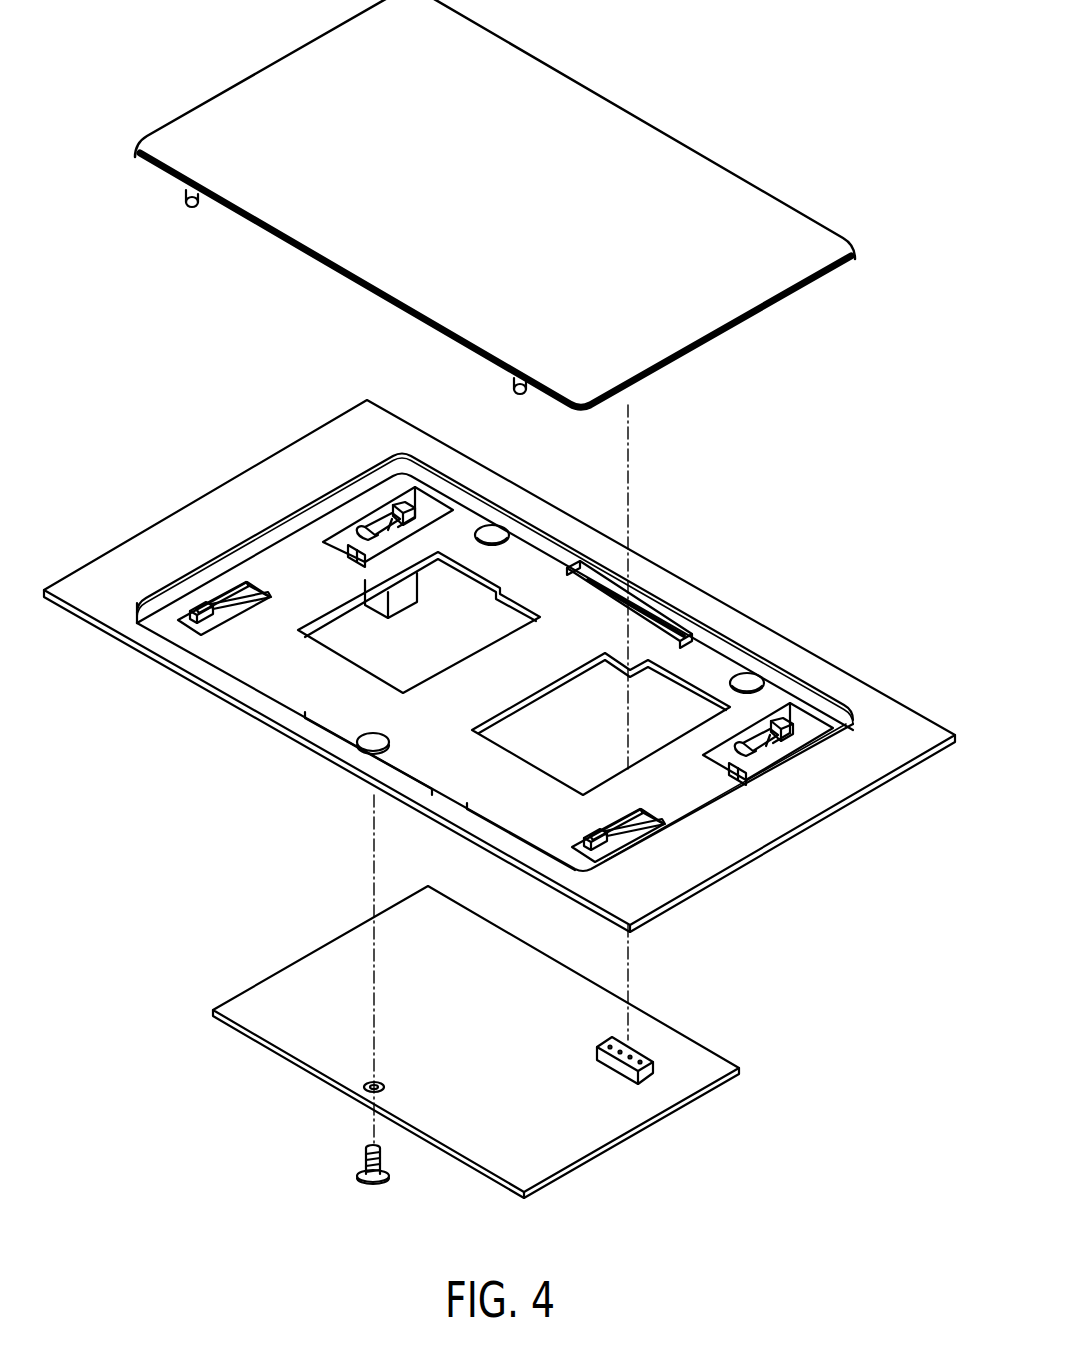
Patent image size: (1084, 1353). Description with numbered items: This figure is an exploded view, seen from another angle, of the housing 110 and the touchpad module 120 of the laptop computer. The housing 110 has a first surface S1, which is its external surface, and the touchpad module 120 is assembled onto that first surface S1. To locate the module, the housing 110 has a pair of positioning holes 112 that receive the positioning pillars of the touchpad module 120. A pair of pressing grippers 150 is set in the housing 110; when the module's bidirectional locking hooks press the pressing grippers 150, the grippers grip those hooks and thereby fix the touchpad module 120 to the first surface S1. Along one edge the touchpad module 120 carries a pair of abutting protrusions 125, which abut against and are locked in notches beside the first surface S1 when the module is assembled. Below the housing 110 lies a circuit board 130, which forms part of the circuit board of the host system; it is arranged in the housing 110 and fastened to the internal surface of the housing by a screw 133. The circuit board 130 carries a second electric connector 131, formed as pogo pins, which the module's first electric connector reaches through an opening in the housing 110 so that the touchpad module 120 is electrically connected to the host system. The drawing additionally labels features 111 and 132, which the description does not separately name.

The housing 110 is at (680, 500).
The connector slot 111 is at (683, 630).
The positioning holes 112 is at (493, 528).
The touchpad module 120 is at (656, 74).
The abutting protrusions 125 is at (516, 388).
The circuit board 130 is at (617, 1112).
The second electric connector 131 is at (652, 1073).
The screw hole 132 is at (364, 1080).
The screw 133 is at (363, 1162).
The pressing grippers 150 is at (373, 530).
The first surface S1 is at (280, 562).